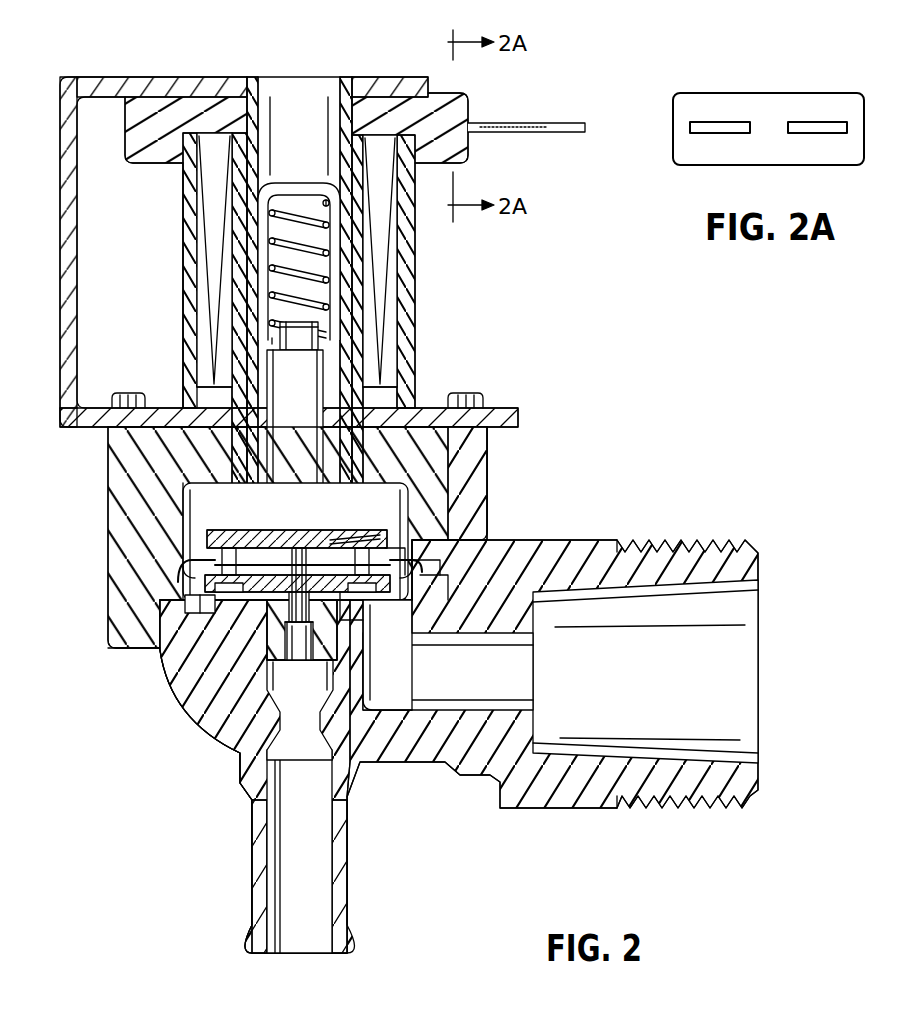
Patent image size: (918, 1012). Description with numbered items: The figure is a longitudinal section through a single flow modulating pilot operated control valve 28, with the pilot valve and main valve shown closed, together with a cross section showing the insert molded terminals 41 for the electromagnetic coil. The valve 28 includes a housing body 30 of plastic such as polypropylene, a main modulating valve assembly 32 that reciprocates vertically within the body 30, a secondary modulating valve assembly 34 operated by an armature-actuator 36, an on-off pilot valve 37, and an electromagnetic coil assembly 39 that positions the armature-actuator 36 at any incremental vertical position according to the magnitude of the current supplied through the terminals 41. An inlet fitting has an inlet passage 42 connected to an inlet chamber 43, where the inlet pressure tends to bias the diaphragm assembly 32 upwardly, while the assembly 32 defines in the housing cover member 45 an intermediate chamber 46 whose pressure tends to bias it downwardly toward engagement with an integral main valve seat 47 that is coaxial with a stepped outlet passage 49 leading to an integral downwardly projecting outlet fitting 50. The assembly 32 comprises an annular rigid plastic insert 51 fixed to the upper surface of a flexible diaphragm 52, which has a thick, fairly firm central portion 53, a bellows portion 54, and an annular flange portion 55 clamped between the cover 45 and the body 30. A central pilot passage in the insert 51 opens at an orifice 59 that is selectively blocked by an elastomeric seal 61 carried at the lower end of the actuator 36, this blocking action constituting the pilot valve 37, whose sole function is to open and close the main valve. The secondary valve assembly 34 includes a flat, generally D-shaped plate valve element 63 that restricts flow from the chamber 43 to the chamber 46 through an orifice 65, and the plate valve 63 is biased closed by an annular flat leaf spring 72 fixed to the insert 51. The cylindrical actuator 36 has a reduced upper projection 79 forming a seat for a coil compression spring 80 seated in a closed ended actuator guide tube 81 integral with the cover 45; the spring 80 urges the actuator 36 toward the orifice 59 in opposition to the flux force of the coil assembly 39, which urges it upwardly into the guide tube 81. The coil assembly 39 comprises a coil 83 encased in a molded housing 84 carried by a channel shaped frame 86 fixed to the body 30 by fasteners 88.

In FIG. 2, the valve 28 is at (150, 690).
In FIG. 2, the housing body 30 is at (505, 540).
In FIG. 2, the main modulating valve assembly 32 is at (160, 652).
In FIG. 2, the secondary modulating valve assembly 34 is at (362, 527).
In FIG. 2, the armature-actuator 36 is at (295, 378).
In FIG. 2, the on-off pilot valve 37 is at (205, 518).
In FIG. 2, the electromagnetic coil assembly 39 is at (445, 284).
In FIG. 2, the terminals 41 is at (548, 123).
In FIG. 2A, the terminals 41 is at (718, 122).
In FIG. 2, the inlet passage 42 is at (487, 710).
In FIG. 2, the inlet chamber 43 is at (390, 690).
In FIG. 2, the housing cover member 45 is at (437, 457).
In FIG. 2, the intermediate chamber 46 is at (210, 488).
In FIG. 2, the main valve seat 47 is at (195, 700).
In FIG. 2, the stepped outlet passage 49 is at (305, 712).
In FIG. 2, the outlet fitting 50 is at (252, 882).
In FIG. 2, the annular rigid plastic insert 51 is at (190, 577).
In FIG. 2, the flexible diaphragm 52 is at (205, 600).
In FIG. 2, the central portion 53 is at (370, 595).
In FIG. 2, the bellows portion 54 is at (432, 535).
In FIG. 2, the annular flange portion 55 is at (440, 555).
In FIG. 2, the orifice 59 is at (290, 530).
In FIG. 2, the elastomeric seal 61 is at (303, 525).
In FIG. 2, the plate valve element 63 is at (395, 527).
In FIG. 2, the orifice 65 is at (360, 536).
In FIG. 2, the annular flat leaf spring 72 is at (215, 548).
In FIG. 2, the reduced upper projection 79 is at (290, 330).
In FIG. 2, the coil compression spring 80 is at (298, 215).
In FIG. 2, the actuator guide tube 81 is at (338, 300).
In FIG. 2, the coil 83 is at (412, 240).
In FIG. 2, the molded housing 84 is at (415, 115).
In FIG. 2, the channel shaped frame 86 is at (112, 77).
In FIG. 2, the fasteners 88 is at (470, 396).